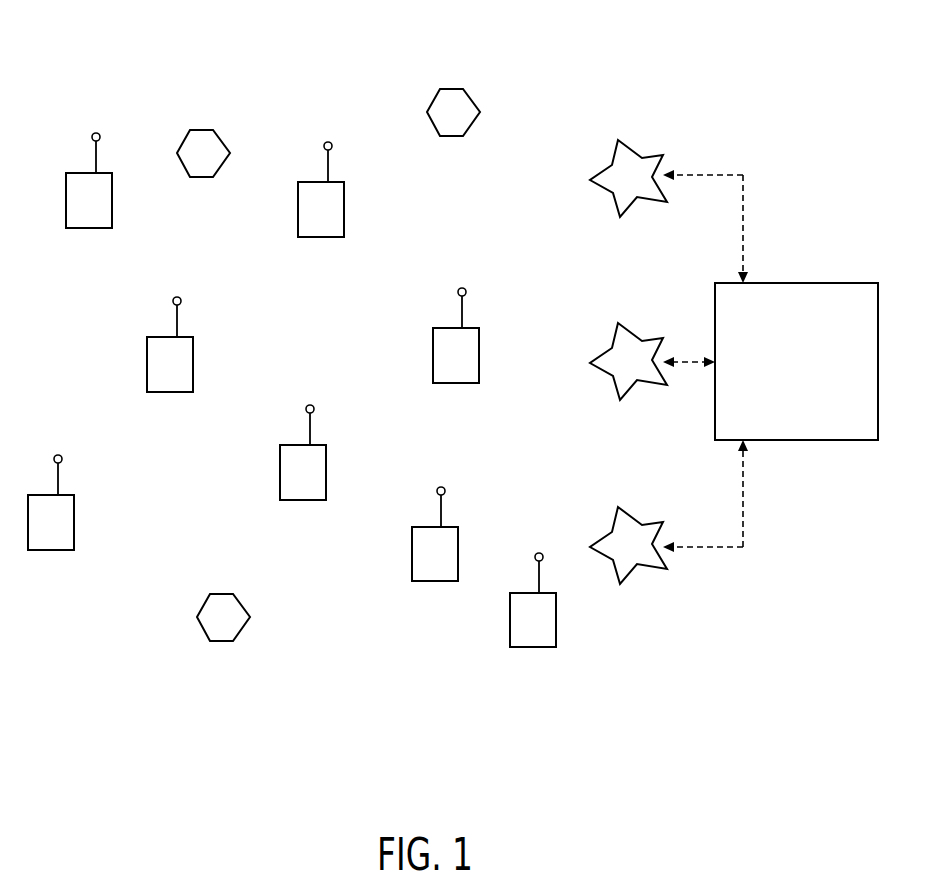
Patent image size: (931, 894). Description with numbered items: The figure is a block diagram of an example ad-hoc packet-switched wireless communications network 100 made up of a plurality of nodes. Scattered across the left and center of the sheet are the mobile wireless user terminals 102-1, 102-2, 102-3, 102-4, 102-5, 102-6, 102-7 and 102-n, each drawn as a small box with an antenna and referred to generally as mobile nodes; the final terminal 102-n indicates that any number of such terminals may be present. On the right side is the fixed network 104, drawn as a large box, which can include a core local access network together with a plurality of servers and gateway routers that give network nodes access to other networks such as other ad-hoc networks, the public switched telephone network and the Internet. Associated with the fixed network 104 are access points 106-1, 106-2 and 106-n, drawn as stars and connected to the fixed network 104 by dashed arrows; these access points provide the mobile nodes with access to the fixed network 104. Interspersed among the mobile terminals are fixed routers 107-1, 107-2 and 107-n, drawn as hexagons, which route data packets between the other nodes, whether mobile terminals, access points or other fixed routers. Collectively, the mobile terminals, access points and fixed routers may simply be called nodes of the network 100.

The ad-hoc packet-switched wireless communications network 100 is at (611, 88).
The mobile wireless user terminal 102-1 is at (88, 228).
The mobile wireless user terminal 102-2 is at (320, 237).
The mobile wireless user terminal 102-3 is at (169, 392).
The mobile wireless user terminal 102-4 is at (50, 550).
The mobile wireless user terminal 102-5 is at (302, 500).
The mobile wireless user terminal 102-6 is at (455, 383).
The mobile wireless user terminal 102-7 is at (433, 581).
The mobile wireless user terminal 102-n is at (532, 647).
The fixed network 104 is at (803, 440).
The access point 106-1 is at (638, 198).
The access point 106-2 is at (638, 381).
The access point 106-n is at (638, 565).
The fixed router 107-1 is at (203, 177).
The fixed router 107-2 is at (453, 136).
The fixed router 107-n is at (223, 641).